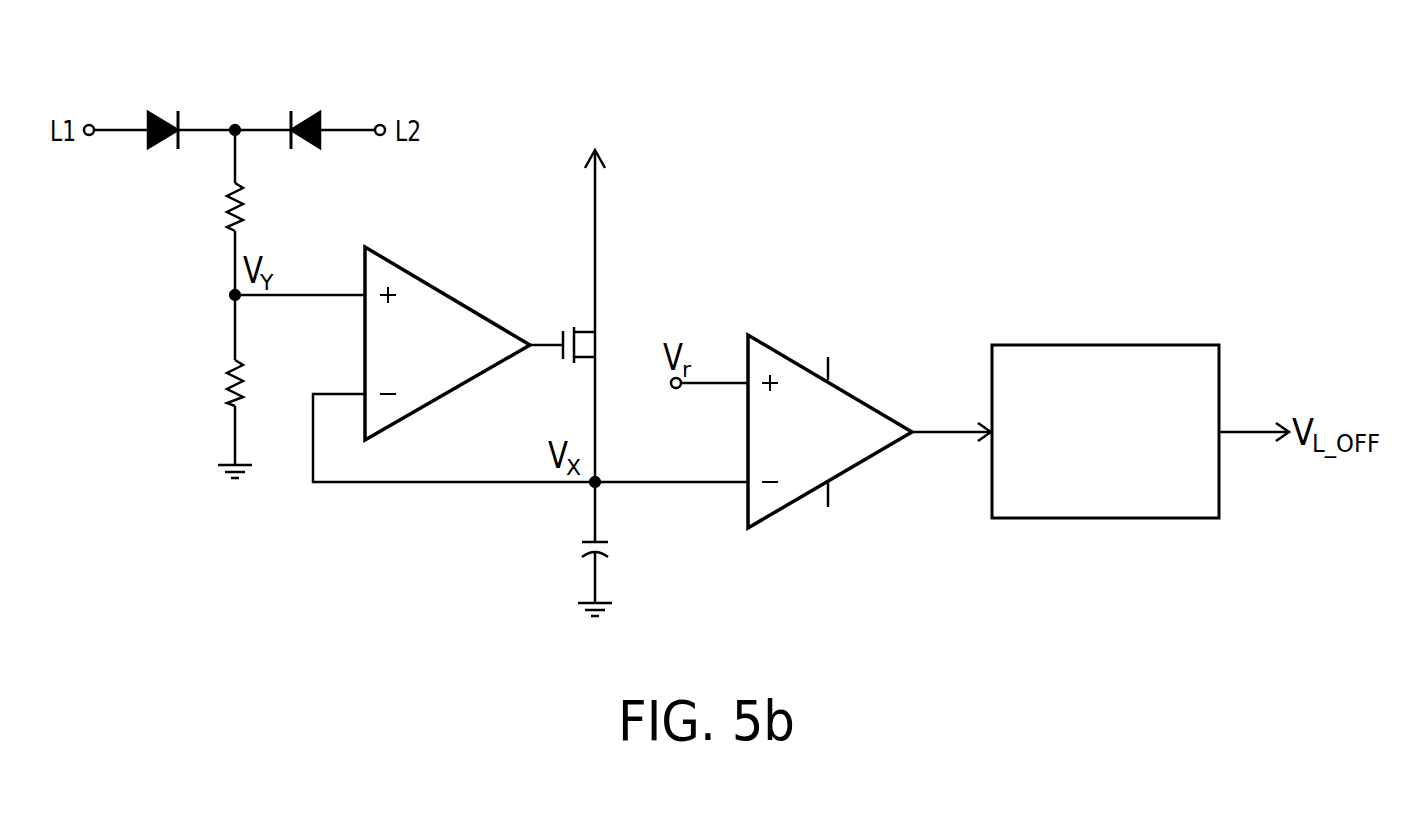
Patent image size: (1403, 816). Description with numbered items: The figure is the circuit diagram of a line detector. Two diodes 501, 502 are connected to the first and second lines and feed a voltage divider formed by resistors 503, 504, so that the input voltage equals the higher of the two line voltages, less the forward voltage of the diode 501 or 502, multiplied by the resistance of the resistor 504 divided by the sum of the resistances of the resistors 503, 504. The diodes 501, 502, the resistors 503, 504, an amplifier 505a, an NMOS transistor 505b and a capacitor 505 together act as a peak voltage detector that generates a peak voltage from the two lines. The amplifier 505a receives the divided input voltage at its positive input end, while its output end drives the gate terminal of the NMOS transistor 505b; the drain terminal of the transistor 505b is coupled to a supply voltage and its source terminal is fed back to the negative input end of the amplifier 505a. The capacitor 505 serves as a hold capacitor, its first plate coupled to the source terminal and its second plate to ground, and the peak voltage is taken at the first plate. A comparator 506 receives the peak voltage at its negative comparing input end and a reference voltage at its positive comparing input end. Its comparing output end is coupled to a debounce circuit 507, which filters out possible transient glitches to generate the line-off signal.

The diode 501 is at (165, 113).
The diode 502 is at (303, 110).
The resistor 503 is at (223, 201).
The resistor 504 is at (219, 384).
The capacitor 505 is at (580, 549).
The amplifier 505a is at (430, 283).
The NMOS transistor 505b is at (600, 340).
The comparator 506 is at (857, 393).
The debounce circuit 507 is at (1105, 345).